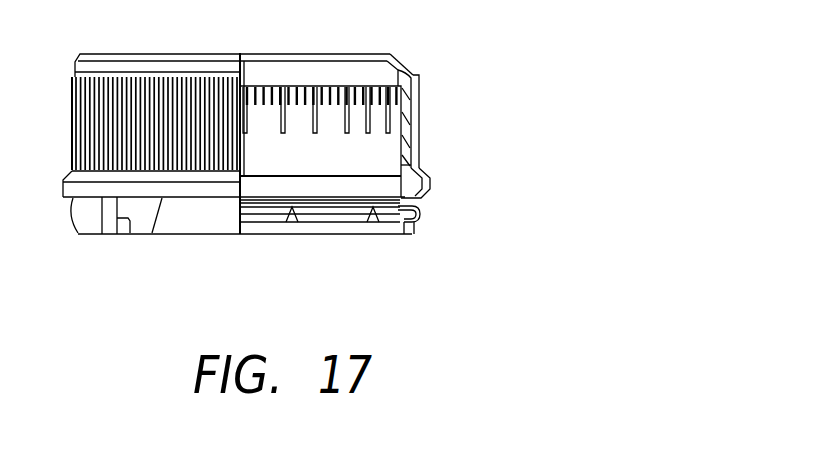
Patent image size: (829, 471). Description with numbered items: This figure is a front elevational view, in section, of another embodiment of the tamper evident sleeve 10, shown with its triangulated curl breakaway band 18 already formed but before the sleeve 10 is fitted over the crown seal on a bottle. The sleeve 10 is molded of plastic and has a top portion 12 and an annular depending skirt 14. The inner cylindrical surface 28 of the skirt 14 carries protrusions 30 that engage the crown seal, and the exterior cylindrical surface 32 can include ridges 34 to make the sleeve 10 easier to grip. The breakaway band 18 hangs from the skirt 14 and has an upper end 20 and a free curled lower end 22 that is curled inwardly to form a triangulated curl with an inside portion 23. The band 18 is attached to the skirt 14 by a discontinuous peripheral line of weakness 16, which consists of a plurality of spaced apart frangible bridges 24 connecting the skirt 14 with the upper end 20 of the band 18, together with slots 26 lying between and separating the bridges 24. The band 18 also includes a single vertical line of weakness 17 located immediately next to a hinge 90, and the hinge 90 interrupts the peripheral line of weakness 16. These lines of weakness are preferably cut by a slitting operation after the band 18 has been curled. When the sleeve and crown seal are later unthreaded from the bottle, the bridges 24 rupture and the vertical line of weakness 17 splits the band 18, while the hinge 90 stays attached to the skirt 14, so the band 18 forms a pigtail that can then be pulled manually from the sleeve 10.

The tamper evident sleeve 10 is at (212, 45).
The top portion 12 is at (411, 52).
The annular depending skirt 14 is at (428, 76).
The peripheral line of weakness 16 is at (433, 197).
The vertical line of weakness 17 is at (130, 220).
The breakaway band 18 is at (418, 222).
The upper end 20 is at (418, 204).
The curled lower end 22 is at (413, 232).
The inside portion 23 is at (395, 228).
The frangible bridges 24 is at (152, 233).
The slots 26 is at (254, 198).
The inner cylindrical surface 28 is at (408, 167).
The protrusions 30 is at (342, 122).
The exterior cylindrical surface 32 is at (420, 128).
The ridges 34 is at (420, 96).
The hinge 90 is at (97, 238).